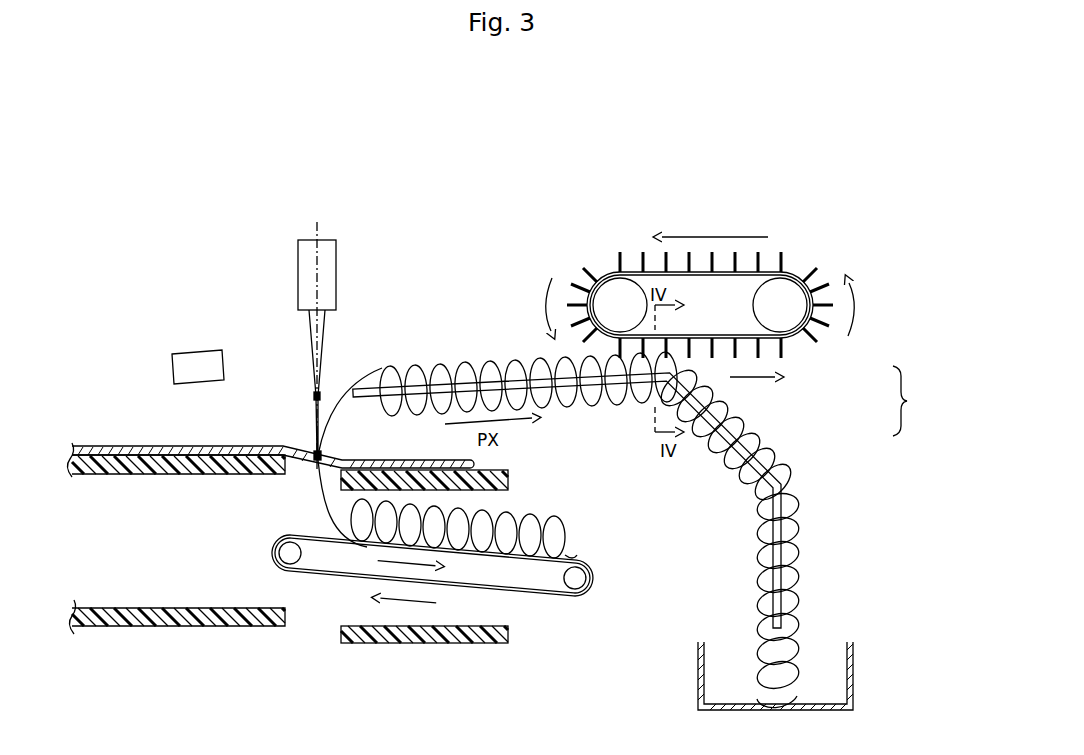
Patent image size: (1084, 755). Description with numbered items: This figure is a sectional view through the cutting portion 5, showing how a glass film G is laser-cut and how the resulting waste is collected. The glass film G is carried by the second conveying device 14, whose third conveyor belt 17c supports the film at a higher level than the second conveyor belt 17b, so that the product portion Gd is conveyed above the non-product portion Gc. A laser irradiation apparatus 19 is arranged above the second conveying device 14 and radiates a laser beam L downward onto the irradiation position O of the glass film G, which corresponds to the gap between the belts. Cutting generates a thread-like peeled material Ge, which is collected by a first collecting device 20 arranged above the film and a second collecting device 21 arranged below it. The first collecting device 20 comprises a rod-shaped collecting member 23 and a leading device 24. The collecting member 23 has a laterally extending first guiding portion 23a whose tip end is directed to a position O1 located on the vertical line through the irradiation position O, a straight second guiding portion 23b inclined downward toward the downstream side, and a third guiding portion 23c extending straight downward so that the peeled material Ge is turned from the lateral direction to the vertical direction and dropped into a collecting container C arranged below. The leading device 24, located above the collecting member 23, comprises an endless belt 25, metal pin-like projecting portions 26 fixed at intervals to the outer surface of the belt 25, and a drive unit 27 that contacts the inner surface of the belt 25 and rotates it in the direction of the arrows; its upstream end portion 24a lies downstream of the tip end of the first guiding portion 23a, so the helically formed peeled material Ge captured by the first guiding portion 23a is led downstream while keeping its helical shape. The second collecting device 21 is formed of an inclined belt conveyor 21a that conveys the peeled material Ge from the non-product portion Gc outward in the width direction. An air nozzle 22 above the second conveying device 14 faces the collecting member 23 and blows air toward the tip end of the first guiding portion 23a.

The cutting portion 5 is at (497, 156).
The second conveying device 14 is at (179, 640).
The second conveyor belt 17b is at (509, 481).
The third conveyor belt 17c is at (160, 475).
The laser irradiation apparatus 19 is at (336, 263).
The first collecting device 20 is at (914, 401).
The second collecting device 21 is at (453, 602).
The belt conveyor 21a is at (547, 598).
The air nozzle 22 is at (196, 352).
The collecting member 23 is at (622, 473).
The first guiding portion 23a is at (506, 386).
The second guiding portion 23b is at (735, 463).
The third guiding portion 23c is at (790, 572).
The leading device 24 is at (719, 298).
The upstream end portion 24a is at (575, 292).
The endless belt 25 is at (723, 275).
The projecting portions 26 is at (782, 252).
The drive unit 27 is at (797, 299).
The laser beam L is at (330, 334).
The position above the irradiation position O1 is at (313, 395).
The irradiation position O is at (321, 455).
The glass film G is at (273, 421).
The product portion Gd is at (133, 446).
The non-product portion Gc is at (396, 462).
The thread-like peeled material Ge is at (397, 369).
The collecting container C is at (722, 712).